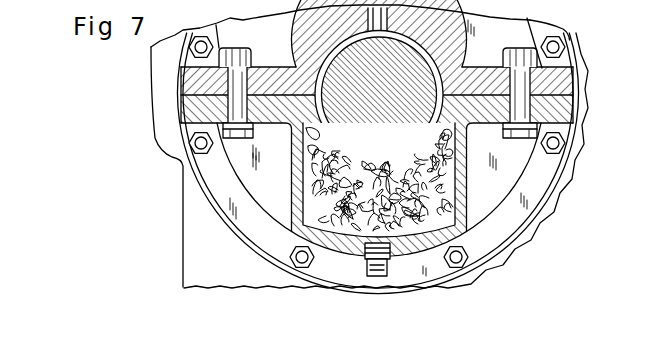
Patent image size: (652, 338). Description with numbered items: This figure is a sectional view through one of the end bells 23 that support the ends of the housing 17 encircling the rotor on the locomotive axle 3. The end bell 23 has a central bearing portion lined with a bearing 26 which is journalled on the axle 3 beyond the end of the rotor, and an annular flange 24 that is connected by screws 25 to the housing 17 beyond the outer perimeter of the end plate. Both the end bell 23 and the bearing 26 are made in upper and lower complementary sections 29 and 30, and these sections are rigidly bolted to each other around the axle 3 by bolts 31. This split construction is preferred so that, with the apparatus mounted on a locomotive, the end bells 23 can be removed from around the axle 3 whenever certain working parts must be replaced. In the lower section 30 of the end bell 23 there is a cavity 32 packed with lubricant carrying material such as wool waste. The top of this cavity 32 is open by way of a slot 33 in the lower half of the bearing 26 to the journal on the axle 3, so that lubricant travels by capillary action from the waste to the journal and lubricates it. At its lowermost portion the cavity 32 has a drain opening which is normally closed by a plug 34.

The axle 3 is at (401, 62).
The housing 17 is at (158, 87).
The end bell 23 is at (503, 32).
The annular flange 24 is at (578, 64).
The screws 25 is at (189, 50).
The bearing 26 is at (326, 45).
The upper section 29 is at (575, 91).
The lower section 30 is at (577, 119).
The bolts 31 is at (237, 107).
The cavity 32 is at (298, 194).
The slot 33 is at (305, 172).
The plug 34 is at (365, 266).